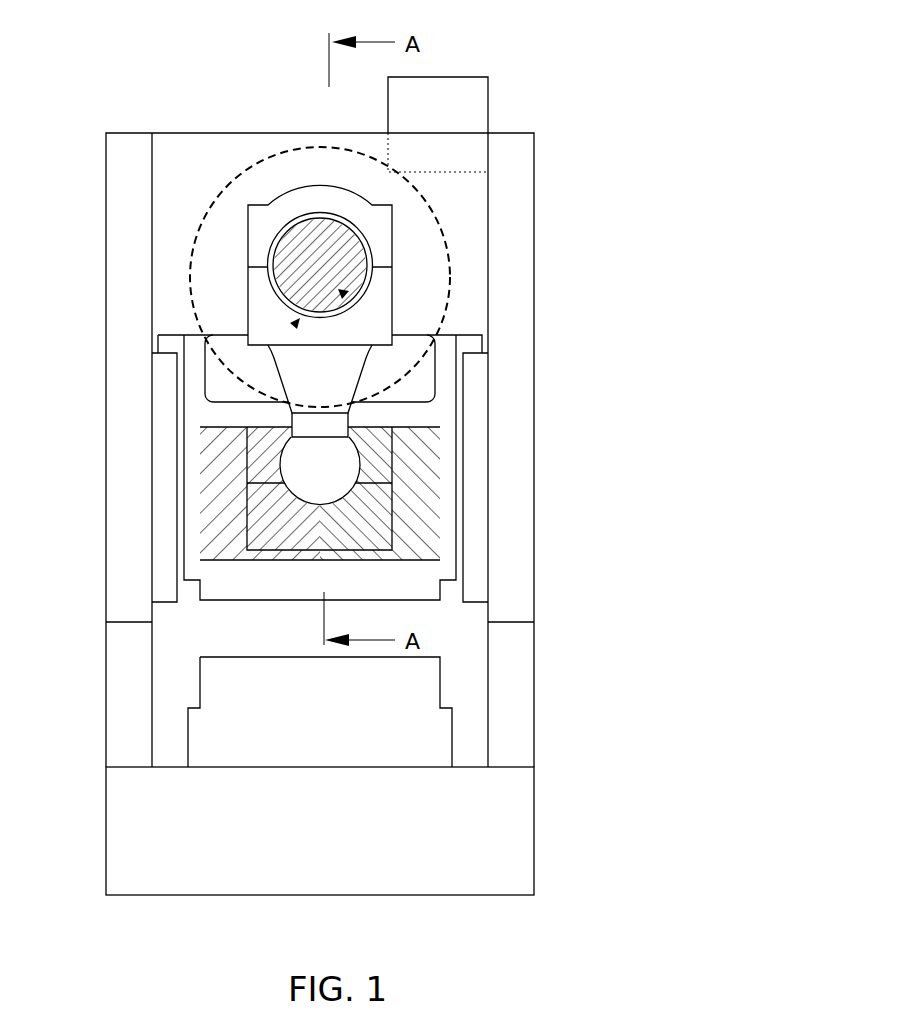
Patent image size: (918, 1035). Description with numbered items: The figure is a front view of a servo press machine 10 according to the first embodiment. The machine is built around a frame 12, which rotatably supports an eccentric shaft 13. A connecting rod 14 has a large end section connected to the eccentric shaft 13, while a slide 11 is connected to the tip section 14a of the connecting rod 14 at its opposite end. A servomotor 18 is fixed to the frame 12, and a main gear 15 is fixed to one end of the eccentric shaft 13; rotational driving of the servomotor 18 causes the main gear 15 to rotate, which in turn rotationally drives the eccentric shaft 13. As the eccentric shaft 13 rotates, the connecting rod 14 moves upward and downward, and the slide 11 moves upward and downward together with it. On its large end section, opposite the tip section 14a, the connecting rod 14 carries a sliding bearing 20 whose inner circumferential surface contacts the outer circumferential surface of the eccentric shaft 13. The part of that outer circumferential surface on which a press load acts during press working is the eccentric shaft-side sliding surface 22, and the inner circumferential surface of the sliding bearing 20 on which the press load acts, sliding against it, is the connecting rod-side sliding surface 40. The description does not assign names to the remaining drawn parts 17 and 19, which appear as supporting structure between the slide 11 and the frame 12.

The servo press machine 10 is at (511, 63).
The slide 11 is at (425, 521).
The frame 12 is at (519, 243).
The eccentric shaft 13 is at (268, 285).
The connecting rod 14 is at (337, 381).
The tip section 14a is at (341, 468).
The main gear 15 is at (243, 170).
The inner support block 17 is at (245, 460).
The servomotor 18 is at (489, 102).
The plate 19 is at (238, 416).
The sliding bearing 20 is at (357, 257).
The eccentric shaft-side sliding surface 22 is at (293, 323).
The connecting rod-side sliding surface 40 is at (346, 292).